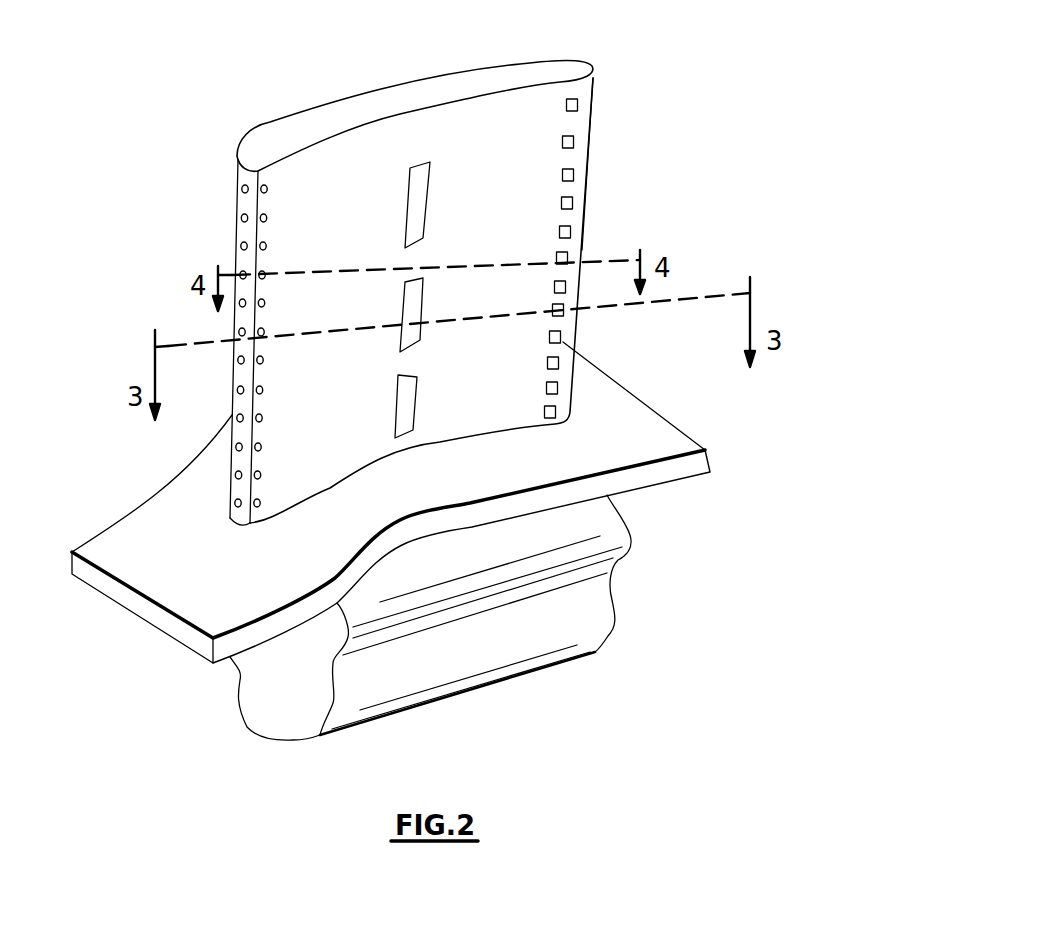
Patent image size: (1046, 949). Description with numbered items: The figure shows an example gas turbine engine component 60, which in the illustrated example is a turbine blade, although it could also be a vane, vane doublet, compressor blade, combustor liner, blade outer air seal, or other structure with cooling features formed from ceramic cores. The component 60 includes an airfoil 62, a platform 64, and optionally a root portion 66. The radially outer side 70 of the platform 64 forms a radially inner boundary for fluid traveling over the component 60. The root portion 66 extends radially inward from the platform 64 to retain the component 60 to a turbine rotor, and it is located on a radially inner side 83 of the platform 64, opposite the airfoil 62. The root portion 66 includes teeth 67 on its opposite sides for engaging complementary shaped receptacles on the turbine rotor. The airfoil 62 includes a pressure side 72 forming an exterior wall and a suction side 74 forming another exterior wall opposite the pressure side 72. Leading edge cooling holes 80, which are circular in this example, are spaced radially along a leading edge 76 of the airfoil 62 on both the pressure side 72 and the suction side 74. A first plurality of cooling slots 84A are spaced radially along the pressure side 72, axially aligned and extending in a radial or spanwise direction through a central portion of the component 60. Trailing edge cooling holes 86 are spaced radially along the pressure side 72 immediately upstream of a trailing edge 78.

The gas turbine engine component 60 is at (529, 265).
The airfoil 62 is at (537, 110).
The platform 64 is at (665, 441).
The root portion 66 is at (547, 645).
The teeth 67 is at (610, 622).
The radially outer side 70 is at (600, 417).
The pressure side 72 is at (452, 125).
The suction side 74 is at (238, 167).
The leading edge 76 is at (235, 320).
The trailing edge 78 is at (586, 230).
The leading edge cooling holes 80 is at (263, 222).
The radially inner side 83 is at (673, 477).
The first plurality of cooling slots 84A is at (421, 211).
The trailing edge cooling holes 86 is at (577, 140).